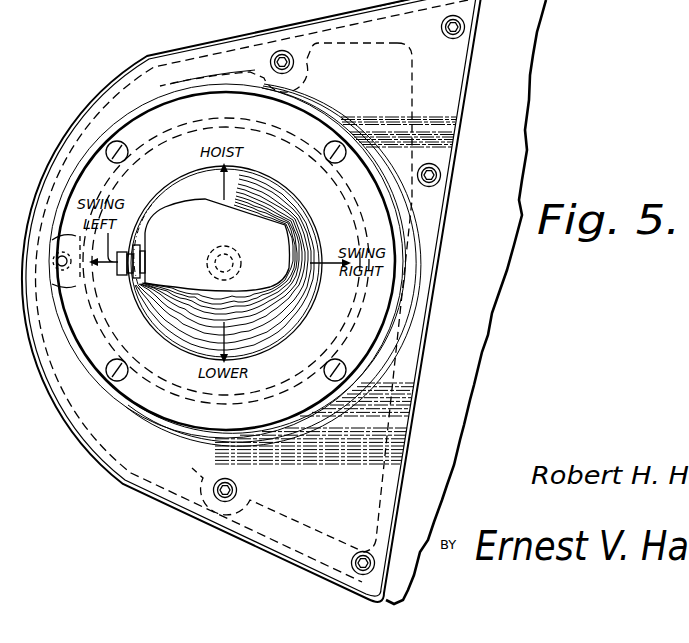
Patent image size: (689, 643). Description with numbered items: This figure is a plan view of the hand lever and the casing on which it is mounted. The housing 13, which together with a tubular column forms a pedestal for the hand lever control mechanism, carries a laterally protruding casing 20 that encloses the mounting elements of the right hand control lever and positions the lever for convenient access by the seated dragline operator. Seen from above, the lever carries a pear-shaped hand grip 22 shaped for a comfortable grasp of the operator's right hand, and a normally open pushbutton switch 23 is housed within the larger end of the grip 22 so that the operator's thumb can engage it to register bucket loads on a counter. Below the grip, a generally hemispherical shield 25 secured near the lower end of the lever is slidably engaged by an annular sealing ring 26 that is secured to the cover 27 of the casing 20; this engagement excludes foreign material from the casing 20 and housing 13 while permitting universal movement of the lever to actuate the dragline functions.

The housing 13 is at (518, 104).
The casing 20 is at (211, 40).
The hand grip 22 is at (284, 228).
The pushbutton switch 23 is at (130, 275).
The hemispherical shield 25 is at (265, 188).
The sealing ring 26 is at (315, 128).
The cover 27 is at (321, 26).